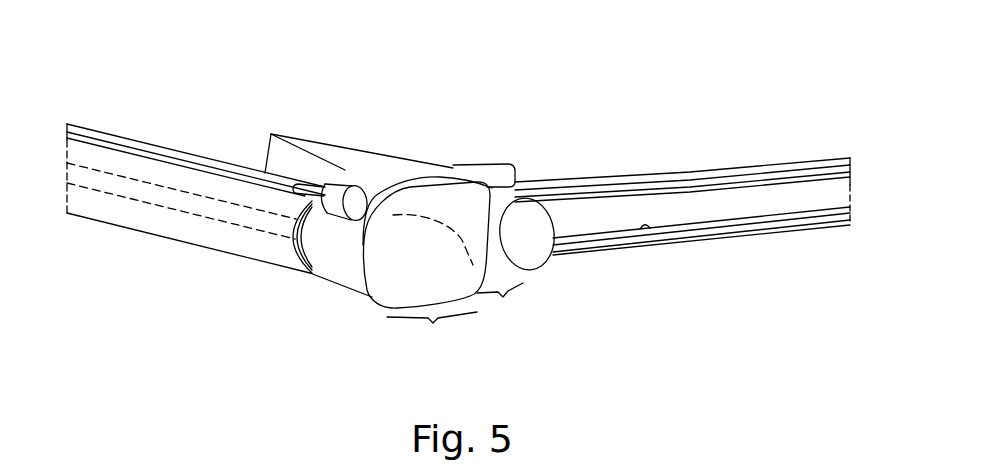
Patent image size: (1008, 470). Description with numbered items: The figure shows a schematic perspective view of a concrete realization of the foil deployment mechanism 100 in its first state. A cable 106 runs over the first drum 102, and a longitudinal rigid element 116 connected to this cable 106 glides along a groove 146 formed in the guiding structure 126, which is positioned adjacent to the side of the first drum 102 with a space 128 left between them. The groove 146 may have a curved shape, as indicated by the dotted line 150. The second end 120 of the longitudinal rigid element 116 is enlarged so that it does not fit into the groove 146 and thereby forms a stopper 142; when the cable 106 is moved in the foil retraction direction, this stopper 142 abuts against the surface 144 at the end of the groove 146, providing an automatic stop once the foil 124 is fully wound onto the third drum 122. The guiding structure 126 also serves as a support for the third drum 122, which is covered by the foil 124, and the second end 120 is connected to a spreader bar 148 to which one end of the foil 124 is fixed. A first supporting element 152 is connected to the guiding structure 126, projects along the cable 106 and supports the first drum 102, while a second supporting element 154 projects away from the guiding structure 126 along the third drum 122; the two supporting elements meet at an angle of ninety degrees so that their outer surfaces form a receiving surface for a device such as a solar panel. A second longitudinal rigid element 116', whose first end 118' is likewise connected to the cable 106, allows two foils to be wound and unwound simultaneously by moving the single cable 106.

The foil deployment mechanism 100 is at (514, 78).
The first drum 102 is at (532, 250).
The cable 106 is at (580, 180).
The longitudinal rigid element 116 is at (682, 146).
The second longitudinal rigid element 116' is at (707, 175).
The first end of the second longitudinal rigid element 118' is at (677, 170).
The second end of the longitudinal rigid element 120 is at (344, 202).
The third drum 122 is at (150, 205).
The foil 124 is at (207, 237).
The guiding structure 126 is at (433, 323).
The space 128 is at (503, 297).
The stopper 142 is at (328, 225).
The surface 144 is at (323, 265).
The groove 146 is at (423, 188).
The spreader bar 148 is at (322, 185).
The dotted line 150 is at (432, 208).
The first supporting element 152 is at (502, 170).
The second supporting element 154 is at (332, 150).